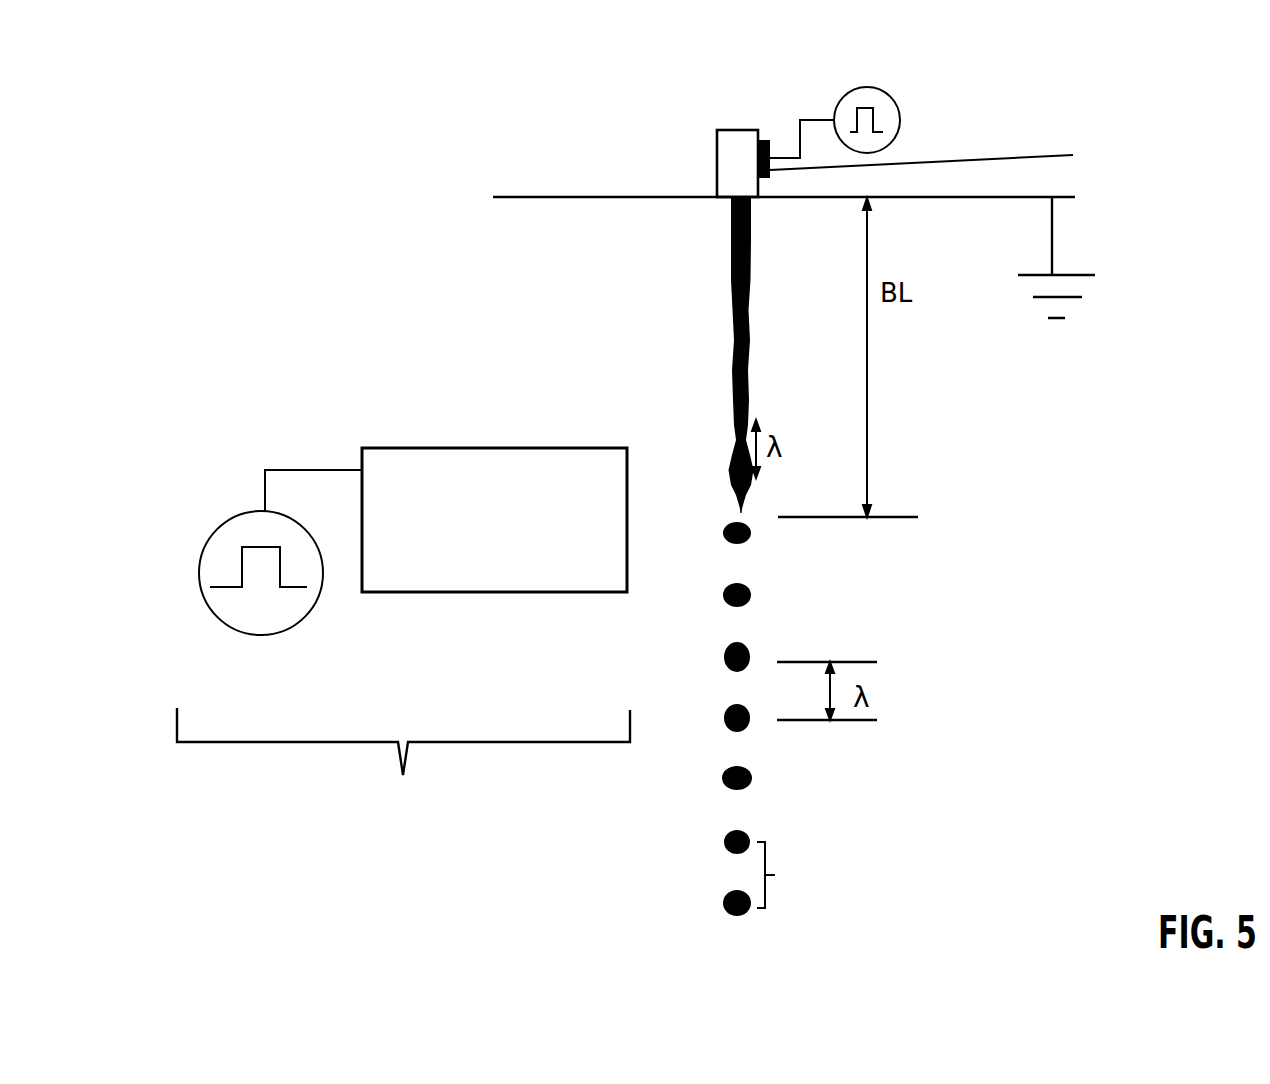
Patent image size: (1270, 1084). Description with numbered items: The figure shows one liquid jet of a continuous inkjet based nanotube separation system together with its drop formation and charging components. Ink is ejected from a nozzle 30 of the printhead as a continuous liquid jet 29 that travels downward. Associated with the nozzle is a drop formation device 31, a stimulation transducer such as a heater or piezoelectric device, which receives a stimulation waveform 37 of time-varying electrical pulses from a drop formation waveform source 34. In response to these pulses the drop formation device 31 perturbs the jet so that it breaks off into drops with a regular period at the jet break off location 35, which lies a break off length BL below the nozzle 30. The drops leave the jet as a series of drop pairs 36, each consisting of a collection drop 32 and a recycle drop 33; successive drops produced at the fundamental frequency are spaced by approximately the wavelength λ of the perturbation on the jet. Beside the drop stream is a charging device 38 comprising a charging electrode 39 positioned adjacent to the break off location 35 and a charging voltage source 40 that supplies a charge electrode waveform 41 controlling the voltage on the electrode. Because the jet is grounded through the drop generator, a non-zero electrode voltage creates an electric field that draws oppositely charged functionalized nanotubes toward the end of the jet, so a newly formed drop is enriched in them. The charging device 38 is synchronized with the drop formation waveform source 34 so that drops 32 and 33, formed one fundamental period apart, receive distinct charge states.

The liquid jet 29 is at (731, 298).
The nozzle 30 is at (717, 180).
The drop formation device 31 is at (939, 151).
The collection drop 32 is at (722, 910).
The recycle drop 33 is at (722, 850).
The drop formation waveform source 34 is at (903, 132).
The jet break off location 35 is at (742, 513).
The drop pair 36 is at (784, 875).
The stimulation waveform 37 is at (857, 108).
The charging device 38 is at (403, 759).
The charging electrode 39 is at (477, 448).
The charging voltage source 40 is at (213, 535).
The charge electrode waveform 41 is at (232, 588).